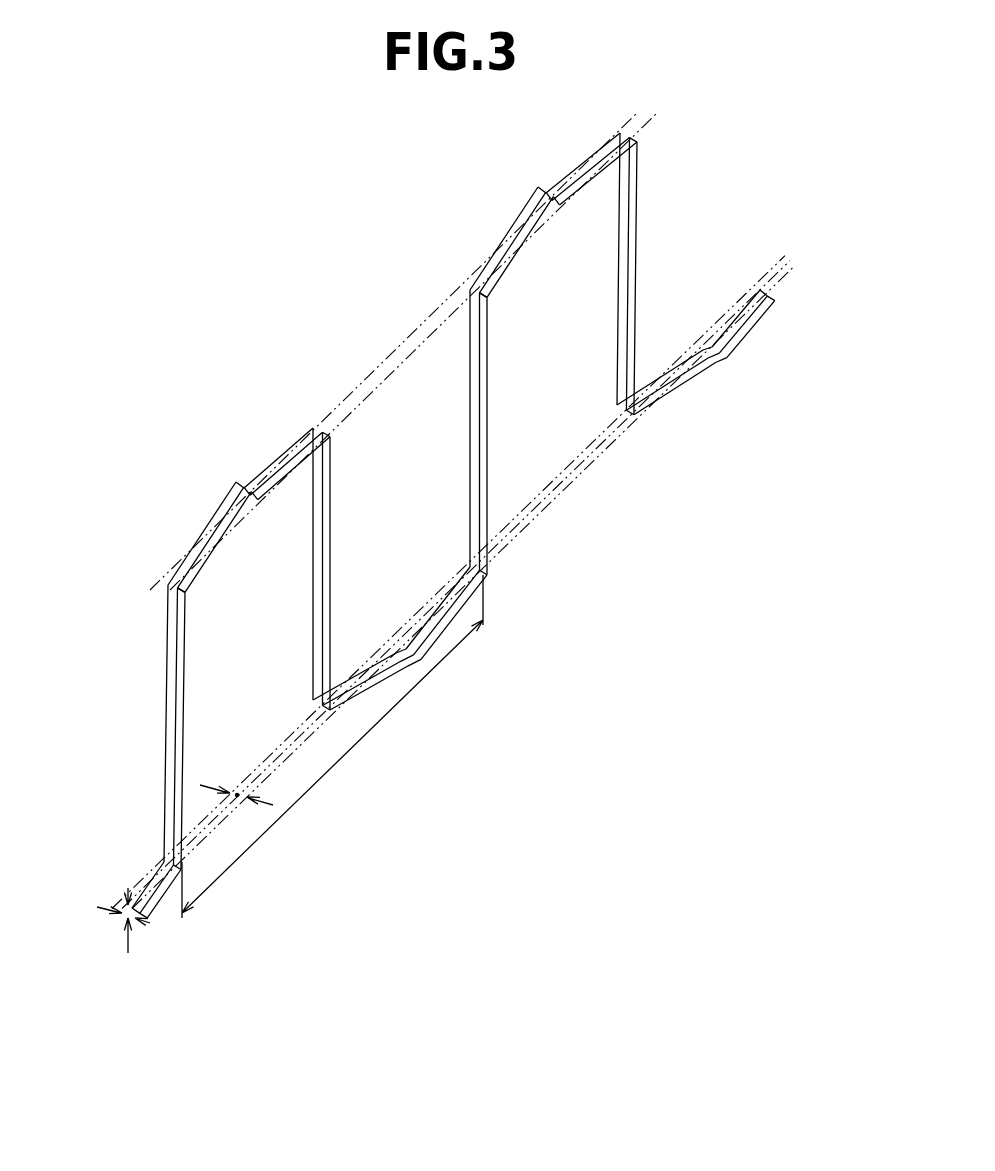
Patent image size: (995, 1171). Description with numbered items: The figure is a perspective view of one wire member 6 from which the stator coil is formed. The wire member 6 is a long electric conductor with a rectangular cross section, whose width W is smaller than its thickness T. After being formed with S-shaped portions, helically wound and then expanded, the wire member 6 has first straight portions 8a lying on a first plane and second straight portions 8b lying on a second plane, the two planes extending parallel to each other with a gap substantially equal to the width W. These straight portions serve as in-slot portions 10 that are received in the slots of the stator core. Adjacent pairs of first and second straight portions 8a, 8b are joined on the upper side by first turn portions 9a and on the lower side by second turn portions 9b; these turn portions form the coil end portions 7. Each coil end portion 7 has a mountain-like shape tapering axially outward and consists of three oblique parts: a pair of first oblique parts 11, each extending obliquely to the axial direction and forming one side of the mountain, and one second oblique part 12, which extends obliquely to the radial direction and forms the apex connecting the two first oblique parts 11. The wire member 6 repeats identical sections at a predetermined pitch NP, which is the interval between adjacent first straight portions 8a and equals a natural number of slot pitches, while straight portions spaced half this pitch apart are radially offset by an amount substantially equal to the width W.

The wire member 6 is at (721, 432).
The coil end portion 7 is at (382, 362).
The first straight portion 8a is at (187, 693).
The second straight portion 8b is at (668, 245).
The first turn portion 9a is at (382, 388).
The second turn portion 9b is at (763, 357).
The in-slot portion 10 is at (152, 642).
The first oblique part 11 is at (238, 478).
The second oblique part 12 is at (215, 437).
The width of the wire member W is at (185, 833).
The thickness of the wire member T is at (128, 936).
The predetermined pitch NP is at (332, 746).